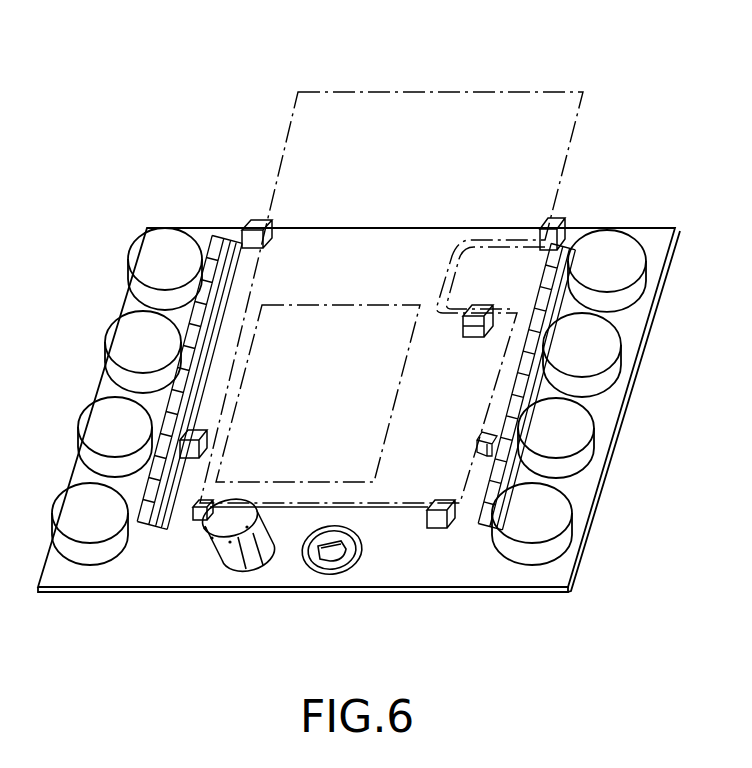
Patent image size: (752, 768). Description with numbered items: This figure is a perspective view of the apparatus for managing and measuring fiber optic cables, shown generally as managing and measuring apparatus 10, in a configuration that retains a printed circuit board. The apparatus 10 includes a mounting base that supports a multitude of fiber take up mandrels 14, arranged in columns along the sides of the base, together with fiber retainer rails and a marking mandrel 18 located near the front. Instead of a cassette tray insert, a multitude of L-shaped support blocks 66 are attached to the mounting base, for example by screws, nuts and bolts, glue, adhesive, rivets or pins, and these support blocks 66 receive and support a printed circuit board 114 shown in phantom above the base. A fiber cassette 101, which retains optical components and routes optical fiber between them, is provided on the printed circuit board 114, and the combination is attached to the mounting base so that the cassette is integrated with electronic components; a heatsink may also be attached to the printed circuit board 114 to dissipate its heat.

The managing and measuring apparatus 10 is at (116, 212).
The fiber take up mandrels 14 is at (150, 258).
The marking mandrel 18 is at (222, 535).
The L-shaped support blocks 66 is at (252, 222).
The fiber cassette 101 is at (322, 475).
The printed circuit board 114 is at (503, 118).